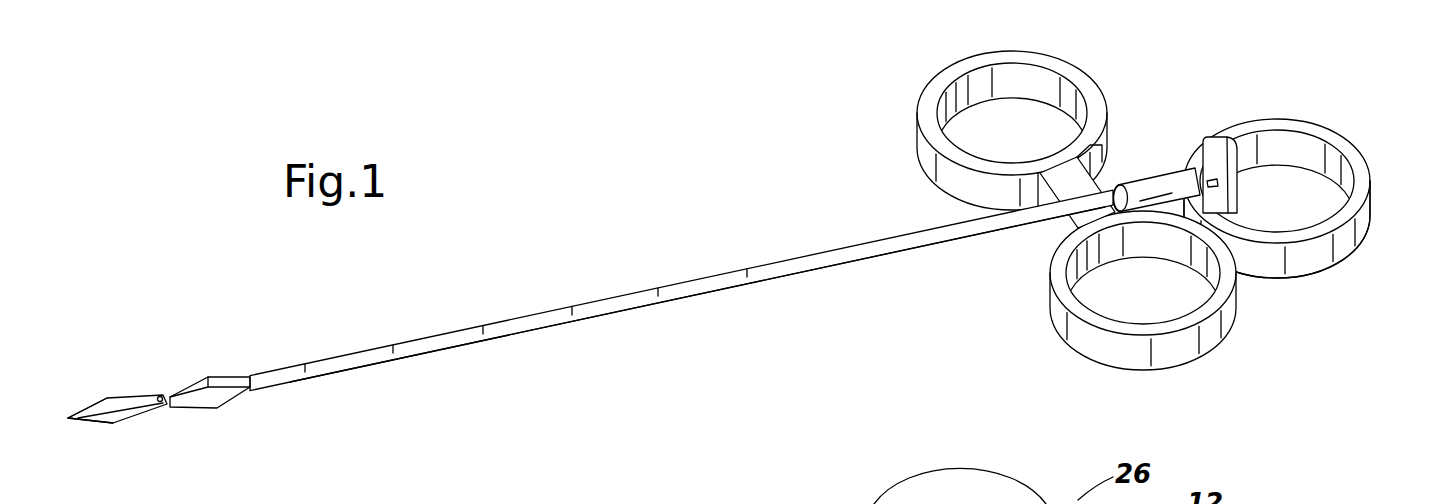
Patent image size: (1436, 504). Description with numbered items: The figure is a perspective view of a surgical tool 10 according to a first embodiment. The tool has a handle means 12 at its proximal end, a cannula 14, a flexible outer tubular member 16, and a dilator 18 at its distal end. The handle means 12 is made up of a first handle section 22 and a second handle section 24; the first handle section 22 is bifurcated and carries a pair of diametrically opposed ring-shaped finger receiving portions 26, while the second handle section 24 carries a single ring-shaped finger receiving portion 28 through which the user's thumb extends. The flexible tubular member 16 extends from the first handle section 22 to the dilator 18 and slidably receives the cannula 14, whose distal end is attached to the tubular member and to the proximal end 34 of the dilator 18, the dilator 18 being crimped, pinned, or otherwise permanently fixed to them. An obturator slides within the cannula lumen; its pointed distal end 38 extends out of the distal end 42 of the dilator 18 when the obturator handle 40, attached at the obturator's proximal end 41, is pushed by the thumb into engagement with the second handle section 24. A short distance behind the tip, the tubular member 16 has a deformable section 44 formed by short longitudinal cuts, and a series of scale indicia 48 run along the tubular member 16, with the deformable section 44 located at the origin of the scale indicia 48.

The surgical tool 10 is at (595, 183).
The handle means 12 is at (1158, 140).
The cannula 14 is at (1060, 218).
The flexible outer tubular member 16 is at (613, 300).
The dilator 18 is at (135, 395).
The first handle section 22 is at (1127, 185).
The second handle section 24 is at (1287, 138).
The ring-shaped finger receiving portions 26 is at (945, 78).
The ring-shaped finger receiving portion 28 is at (1315, 253).
The proximal end of the dilator 34 is at (164, 410).
The pointed distal end of the obturator 38 is at (69, 422).
The obturator handle 40 is at (1222, 138).
The proximal end of the obturator 41 is at (1213, 184).
The distal end of the dilator 42 is at (77, 418).
The deformable section 44 is at (227, 376).
The scale indicia 48 is at (303, 368).